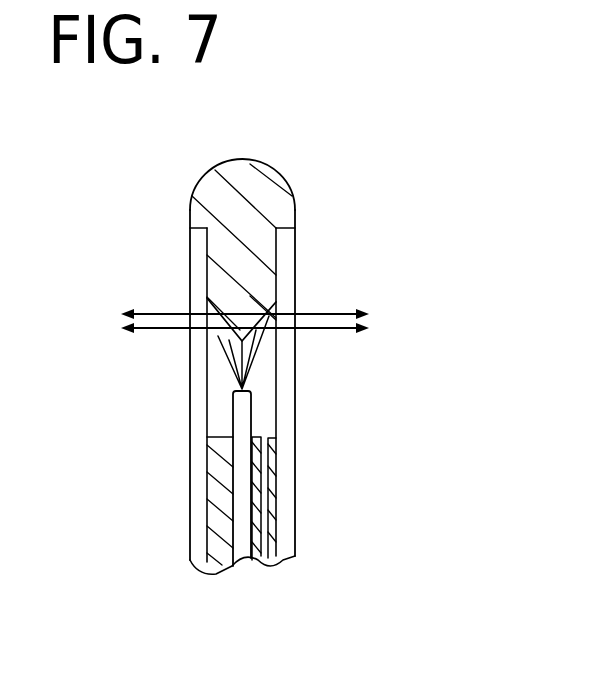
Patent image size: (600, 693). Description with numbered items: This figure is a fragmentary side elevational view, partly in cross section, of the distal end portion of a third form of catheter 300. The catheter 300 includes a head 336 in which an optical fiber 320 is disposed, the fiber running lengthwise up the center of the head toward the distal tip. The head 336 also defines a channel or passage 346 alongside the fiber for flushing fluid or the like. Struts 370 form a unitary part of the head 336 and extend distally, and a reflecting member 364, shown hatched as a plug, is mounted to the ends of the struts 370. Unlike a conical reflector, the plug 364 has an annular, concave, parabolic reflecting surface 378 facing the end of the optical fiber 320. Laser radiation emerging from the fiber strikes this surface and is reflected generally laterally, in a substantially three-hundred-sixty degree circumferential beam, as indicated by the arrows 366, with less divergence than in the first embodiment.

The catheter 300 is at (112, 413).
The optical fiber 320 is at (242, 556).
The head 336 is at (222, 422).
The channel or passage 346 is at (278, 527).
The reflecting member 364 is at (186, 191).
The arrows 366 is at (348, 320).
The struts 370 is at (288, 409).
The parabolic reflecting surface 378 is at (262, 322).